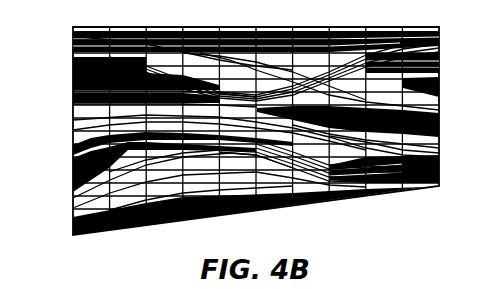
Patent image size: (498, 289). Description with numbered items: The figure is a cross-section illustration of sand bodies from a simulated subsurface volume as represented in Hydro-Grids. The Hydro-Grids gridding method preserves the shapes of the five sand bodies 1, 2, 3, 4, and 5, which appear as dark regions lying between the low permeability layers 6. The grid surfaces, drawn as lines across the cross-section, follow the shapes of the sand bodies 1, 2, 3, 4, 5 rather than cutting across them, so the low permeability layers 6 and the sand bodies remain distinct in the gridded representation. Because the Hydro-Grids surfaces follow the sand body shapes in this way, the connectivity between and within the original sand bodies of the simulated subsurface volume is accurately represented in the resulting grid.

The sand body 1 is at (256, 41).
The sand body 2 is at (146, 80).
The sand body 3 is at (348, 121).
The sand body 4 is at (384, 169).
The sand body 5 is at (249, 211).
The low permeability layers 6 is at (440, 42).